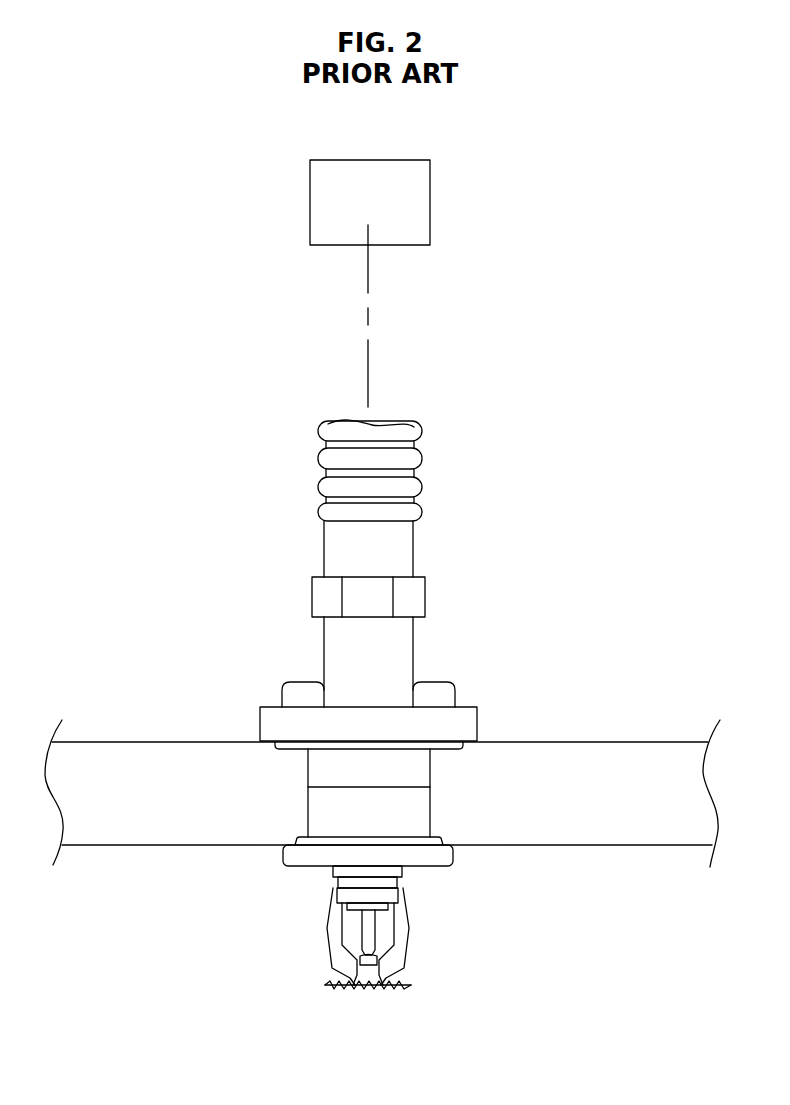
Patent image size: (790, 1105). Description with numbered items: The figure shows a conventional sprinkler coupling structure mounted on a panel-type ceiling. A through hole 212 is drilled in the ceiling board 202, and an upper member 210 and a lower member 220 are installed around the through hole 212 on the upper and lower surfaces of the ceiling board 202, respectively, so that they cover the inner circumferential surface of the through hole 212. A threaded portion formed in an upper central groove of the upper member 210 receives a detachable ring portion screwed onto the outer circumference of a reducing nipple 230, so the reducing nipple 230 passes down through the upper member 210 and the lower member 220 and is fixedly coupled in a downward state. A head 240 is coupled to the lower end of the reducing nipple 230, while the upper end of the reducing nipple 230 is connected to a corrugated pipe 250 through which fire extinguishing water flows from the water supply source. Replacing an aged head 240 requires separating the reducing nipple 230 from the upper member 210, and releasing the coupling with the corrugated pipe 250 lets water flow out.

The ceiling board 202 is at (577, 741).
The upper member 210 is at (477, 719).
The through hole 212 is at (328, 779).
The lower member 220 is at (440, 868).
The reducing nipple 230 is at (332, 652).
The head 240 is at (397, 955).
The corrugated pipe 250 is at (320, 459).